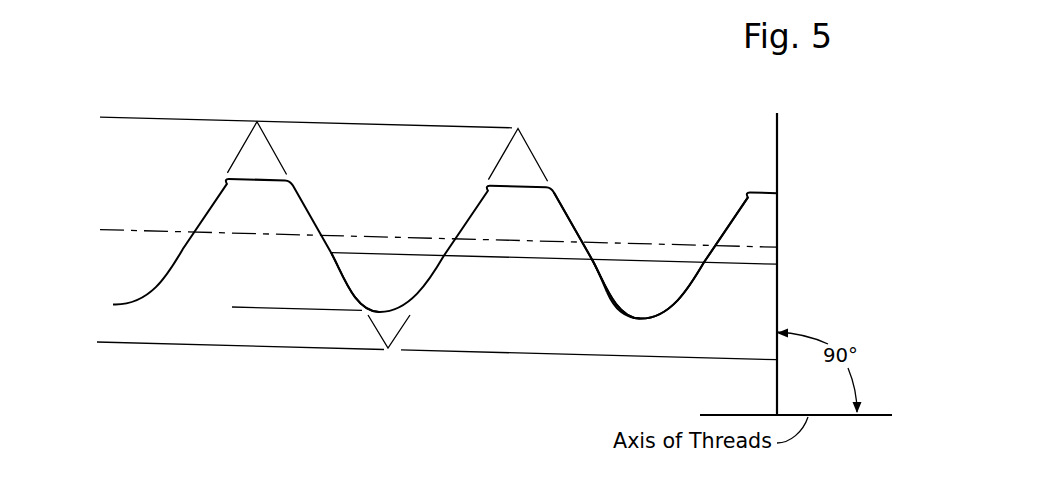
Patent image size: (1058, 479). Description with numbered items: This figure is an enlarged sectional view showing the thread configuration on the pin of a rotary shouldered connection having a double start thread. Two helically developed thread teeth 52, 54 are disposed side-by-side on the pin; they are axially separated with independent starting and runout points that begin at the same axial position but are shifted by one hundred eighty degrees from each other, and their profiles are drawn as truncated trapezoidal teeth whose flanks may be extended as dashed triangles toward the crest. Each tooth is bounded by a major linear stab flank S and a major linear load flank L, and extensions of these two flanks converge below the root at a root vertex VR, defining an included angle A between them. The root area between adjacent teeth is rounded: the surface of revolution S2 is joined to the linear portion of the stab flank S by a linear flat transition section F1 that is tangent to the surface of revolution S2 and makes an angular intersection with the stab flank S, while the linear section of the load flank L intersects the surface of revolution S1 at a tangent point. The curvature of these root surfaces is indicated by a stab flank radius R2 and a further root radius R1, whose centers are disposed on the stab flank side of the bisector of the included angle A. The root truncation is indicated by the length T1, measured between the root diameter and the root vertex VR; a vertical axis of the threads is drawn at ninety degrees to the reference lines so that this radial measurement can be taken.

The thread tooth 52 is at (260, 183).
The thread tooth 54 is at (525, 193).
The included angle A is at (474, 203).
The stab flank S is at (561, 200).
The load flank L is at (733, 211).
The linear flat transition section F1 is at (595, 272).
The root radius R1 is at (608, 302).
The stab flank radius R2 is at (347, 292).
The surface of revolution S1 is at (673, 310).
The surface of revolution S2 is at (620, 313).
The root truncation T1 is at (246, 272).
The root vertex VR is at (388, 349).